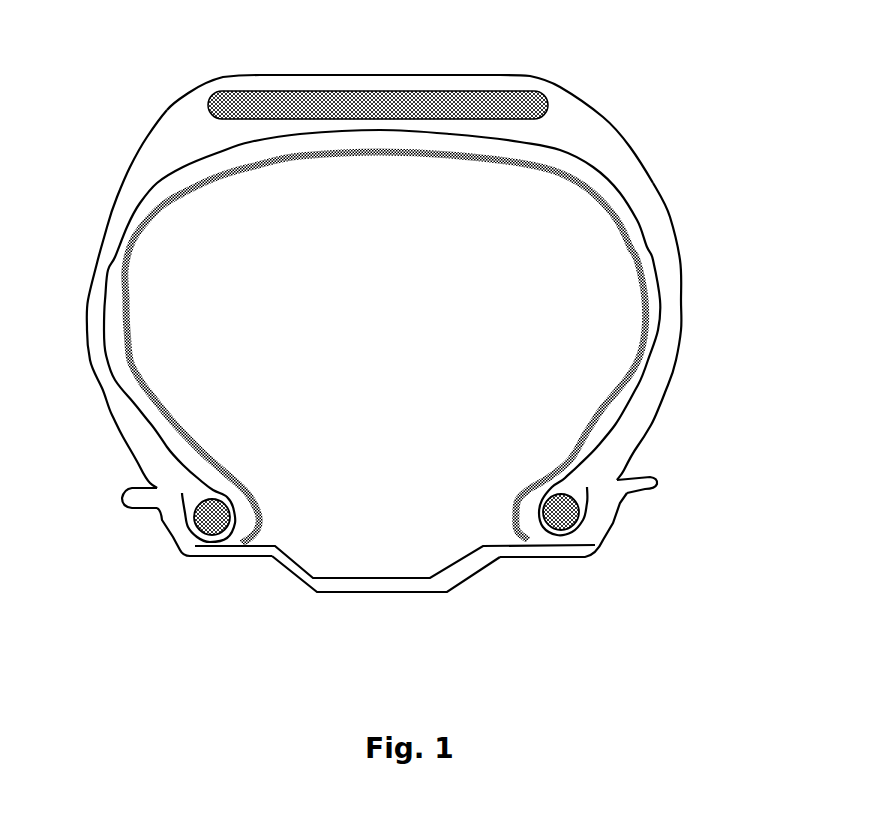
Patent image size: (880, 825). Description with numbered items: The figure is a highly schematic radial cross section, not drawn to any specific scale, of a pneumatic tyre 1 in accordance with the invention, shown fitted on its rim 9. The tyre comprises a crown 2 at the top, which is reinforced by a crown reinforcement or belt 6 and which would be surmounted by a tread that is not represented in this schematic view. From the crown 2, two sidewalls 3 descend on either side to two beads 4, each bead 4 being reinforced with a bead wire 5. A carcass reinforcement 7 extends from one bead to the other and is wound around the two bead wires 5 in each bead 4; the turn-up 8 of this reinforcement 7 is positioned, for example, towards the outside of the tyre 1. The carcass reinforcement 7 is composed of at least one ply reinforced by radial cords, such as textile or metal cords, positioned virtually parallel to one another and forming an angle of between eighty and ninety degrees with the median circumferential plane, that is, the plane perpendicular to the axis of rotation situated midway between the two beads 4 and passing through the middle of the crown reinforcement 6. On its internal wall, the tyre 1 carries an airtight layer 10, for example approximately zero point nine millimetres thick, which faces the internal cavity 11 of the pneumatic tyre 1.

The pneumatic tyre 1 is at (694, 240).
The crown 2 is at (470, 87).
The sidewall 3 is at (94, 305).
The bead 4 is at (238, 537).
The bead wire 5 is at (233, 514).
The crown reinforcement or belt 6 is at (373, 92).
The carcass reinforcement 7 is at (126, 218).
The turn-up 8 is at (180, 497).
The rim 9 is at (172, 527).
The airtight layer 10 is at (643, 277).
The internal cavity 11 is at (227, 338).